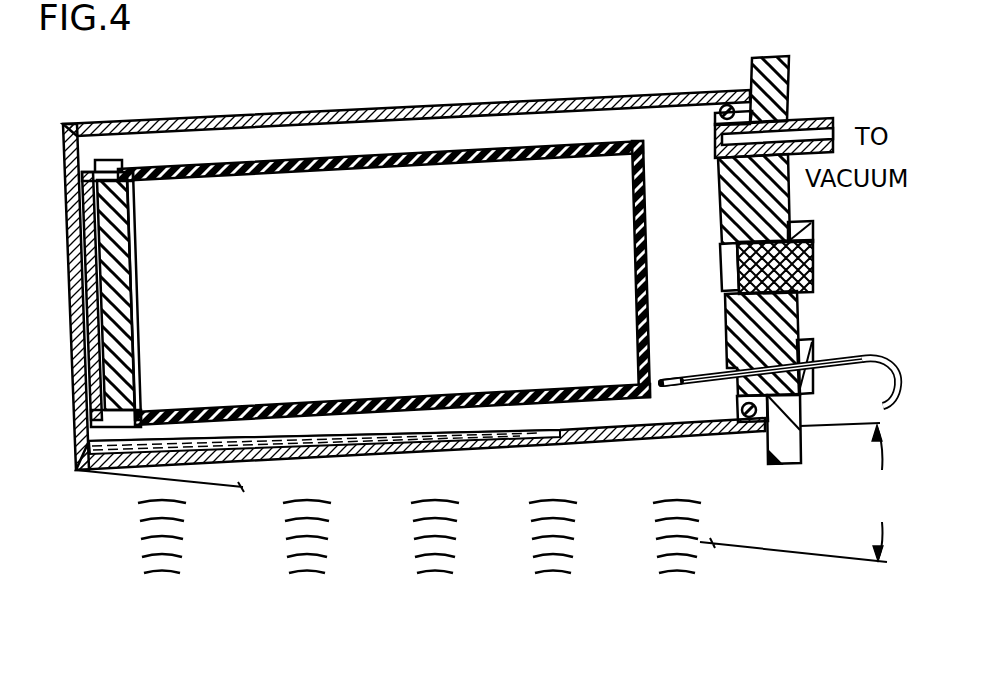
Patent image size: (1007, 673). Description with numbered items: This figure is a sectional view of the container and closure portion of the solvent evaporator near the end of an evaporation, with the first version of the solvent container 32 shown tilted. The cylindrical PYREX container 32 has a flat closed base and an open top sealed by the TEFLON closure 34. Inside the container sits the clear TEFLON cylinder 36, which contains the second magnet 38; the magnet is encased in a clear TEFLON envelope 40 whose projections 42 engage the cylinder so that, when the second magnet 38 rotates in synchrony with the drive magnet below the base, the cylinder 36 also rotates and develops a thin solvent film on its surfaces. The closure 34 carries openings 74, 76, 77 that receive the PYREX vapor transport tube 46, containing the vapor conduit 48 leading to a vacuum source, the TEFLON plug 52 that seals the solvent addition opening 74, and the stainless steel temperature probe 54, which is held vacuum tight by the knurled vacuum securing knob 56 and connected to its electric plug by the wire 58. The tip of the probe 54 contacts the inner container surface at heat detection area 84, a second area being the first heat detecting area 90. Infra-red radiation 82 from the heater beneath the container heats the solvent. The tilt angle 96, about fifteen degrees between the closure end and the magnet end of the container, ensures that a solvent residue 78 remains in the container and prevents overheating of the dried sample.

The solvent container 32 is at (408, 102).
The closure 34 is at (790, 78).
The cylinder 36 is at (640, 212).
The second magnet 38 is at (125, 315).
The envelope 40 is at (138, 234).
The projections 42 is at (112, 168).
The vapor transport tube 46 is at (835, 122).
The vapor conduit 48 is at (840, 134).
The plug 52 is at (814, 258).
The temperature probe 54 is at (852, 356).
The vacuum securing knob 56 is at (810, 340).
The wire 58 is at (888, 380).
The solvent addition opening 74 is at (720, 258).
The opening 76 is at (724, 370).
The opening 77 is at (716, 141).
The solvent residue 78 is at (115, 431).
The infra-red radiation 82 is at (182, 540).
The heat detection area 84 is at (658, 378).
The first heat detecting area 90 is at (664, 425).
The angle 96 is at (847, 492).